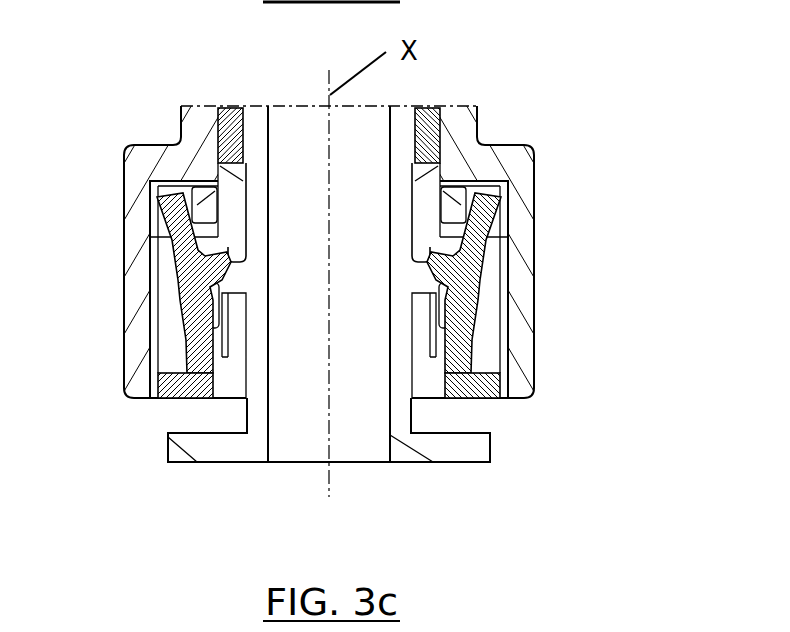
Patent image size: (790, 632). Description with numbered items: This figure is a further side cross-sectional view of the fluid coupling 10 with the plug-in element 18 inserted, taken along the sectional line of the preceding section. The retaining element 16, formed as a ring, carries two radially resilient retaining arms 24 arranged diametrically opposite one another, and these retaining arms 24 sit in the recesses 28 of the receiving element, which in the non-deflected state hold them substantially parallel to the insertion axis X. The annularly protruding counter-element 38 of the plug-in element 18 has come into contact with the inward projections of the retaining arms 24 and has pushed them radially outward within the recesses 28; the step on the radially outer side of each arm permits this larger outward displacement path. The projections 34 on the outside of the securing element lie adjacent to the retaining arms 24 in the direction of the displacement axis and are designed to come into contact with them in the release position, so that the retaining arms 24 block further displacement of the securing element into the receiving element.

The fluid coupling 10 is at (128, 75).
The retaining element 16 is at (481, 386).
The plug-in element 18 is at (465, 452).
The retaining arm 24 is at (487, 215).
The recess 28 is at (446, 259).
The projection 34 is at (447, 197).
The counter-element 38 is at (232, 268).